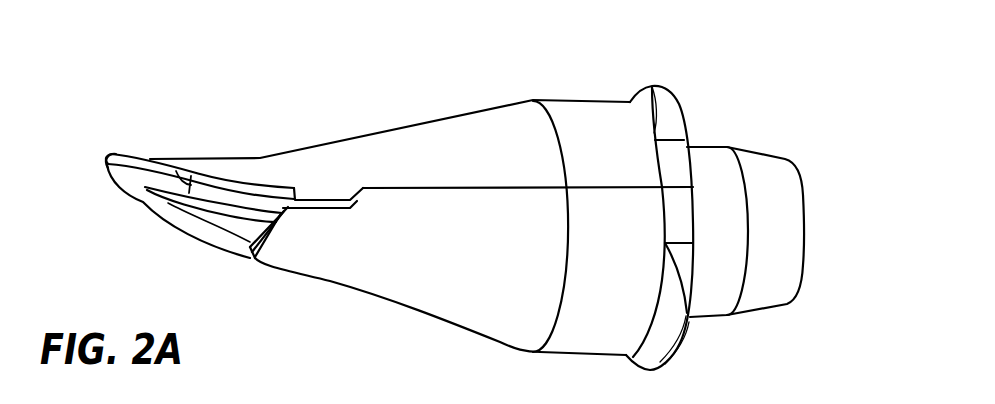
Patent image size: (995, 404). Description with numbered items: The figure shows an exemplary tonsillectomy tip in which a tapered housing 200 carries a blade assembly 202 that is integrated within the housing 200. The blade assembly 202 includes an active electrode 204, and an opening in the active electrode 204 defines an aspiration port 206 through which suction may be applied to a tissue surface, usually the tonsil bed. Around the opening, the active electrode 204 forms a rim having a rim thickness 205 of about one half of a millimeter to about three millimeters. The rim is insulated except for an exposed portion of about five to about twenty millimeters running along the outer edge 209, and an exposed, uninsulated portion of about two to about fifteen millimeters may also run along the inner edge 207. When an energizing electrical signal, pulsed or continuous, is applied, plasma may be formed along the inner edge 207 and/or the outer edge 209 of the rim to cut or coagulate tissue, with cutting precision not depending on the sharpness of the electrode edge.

The housing 200 is at (259, 66).
The blade assembly 202 is at (164, 231).
The active electrode 204 is at (143, 201).
The rim thickness 205 is at (175, 171).
The aspiration port 206 is at (222, 212).
The inner edge 207 is at (245, 238).
The outer edge 209 is at (109, 158).